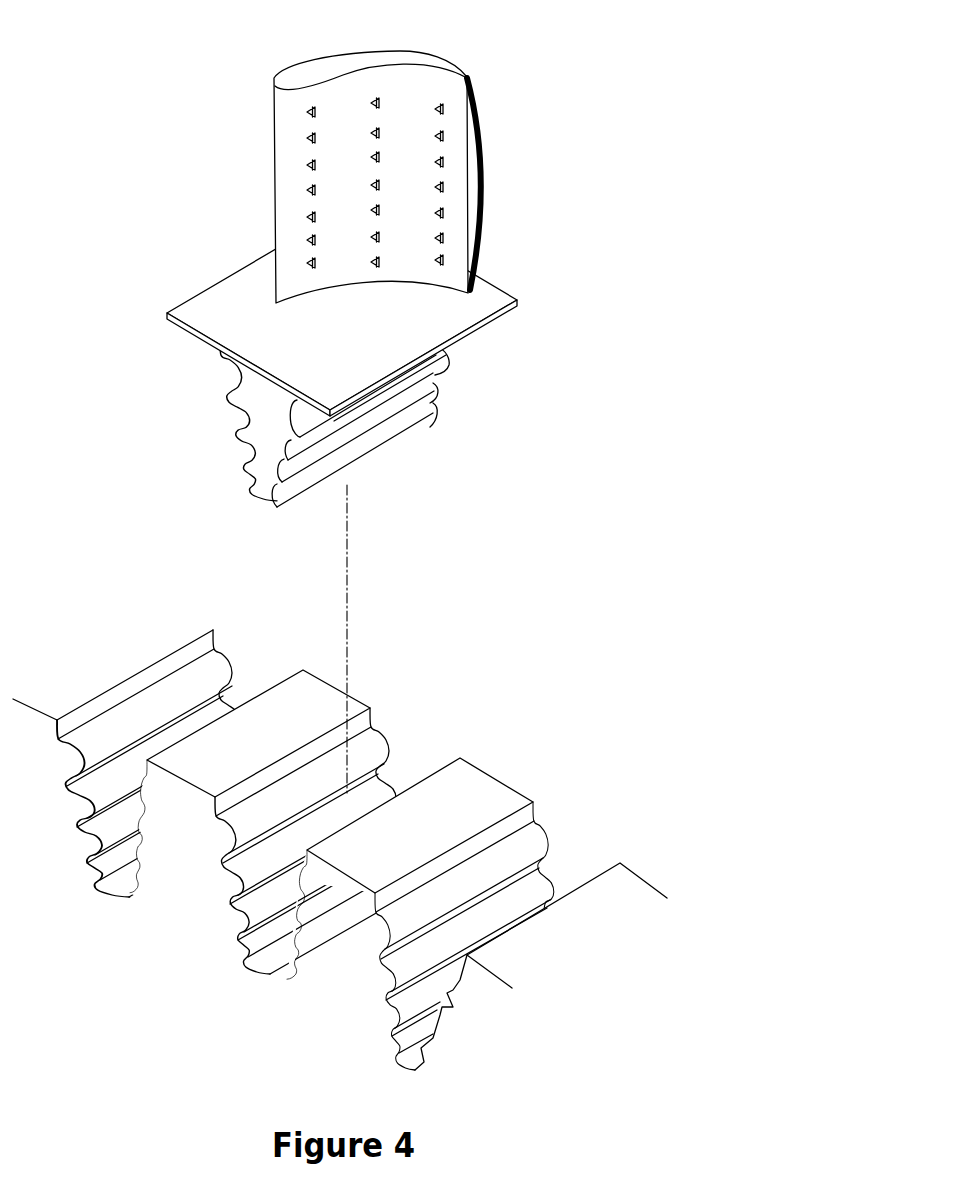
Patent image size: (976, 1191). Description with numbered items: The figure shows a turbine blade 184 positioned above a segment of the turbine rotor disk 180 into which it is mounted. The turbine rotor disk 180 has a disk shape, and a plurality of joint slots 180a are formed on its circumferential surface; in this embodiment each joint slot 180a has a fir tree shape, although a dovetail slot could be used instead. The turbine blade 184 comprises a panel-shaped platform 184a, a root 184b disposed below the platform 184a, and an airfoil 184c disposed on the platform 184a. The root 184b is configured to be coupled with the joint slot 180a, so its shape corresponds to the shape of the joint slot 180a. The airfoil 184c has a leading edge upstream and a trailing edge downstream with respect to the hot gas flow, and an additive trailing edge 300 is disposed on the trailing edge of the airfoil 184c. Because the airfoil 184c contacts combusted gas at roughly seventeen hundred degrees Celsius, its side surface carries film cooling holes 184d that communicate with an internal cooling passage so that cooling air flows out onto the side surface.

The turbine blade 184 is at (350, 260).
The platform 184a is at (203, 306).
The root 184b is at (248, 390).
The airfoil 184c is at (380, 158).
The film cooling hole 184d is at (314, 108).
The additive trailing edge 300 is at (480, 110).
The turbine rotor disk 180 is at (340, 819).
The joint slot 180a is at (172, 737).